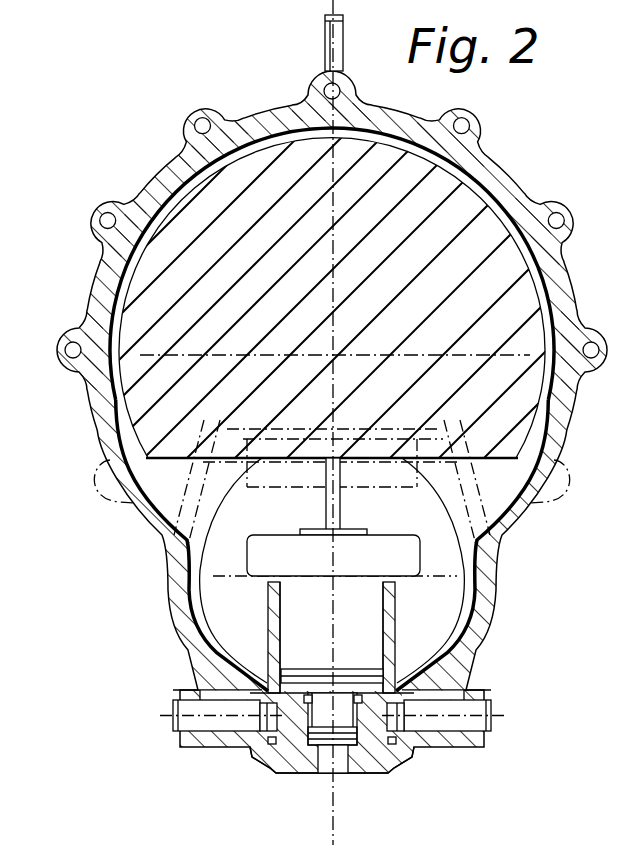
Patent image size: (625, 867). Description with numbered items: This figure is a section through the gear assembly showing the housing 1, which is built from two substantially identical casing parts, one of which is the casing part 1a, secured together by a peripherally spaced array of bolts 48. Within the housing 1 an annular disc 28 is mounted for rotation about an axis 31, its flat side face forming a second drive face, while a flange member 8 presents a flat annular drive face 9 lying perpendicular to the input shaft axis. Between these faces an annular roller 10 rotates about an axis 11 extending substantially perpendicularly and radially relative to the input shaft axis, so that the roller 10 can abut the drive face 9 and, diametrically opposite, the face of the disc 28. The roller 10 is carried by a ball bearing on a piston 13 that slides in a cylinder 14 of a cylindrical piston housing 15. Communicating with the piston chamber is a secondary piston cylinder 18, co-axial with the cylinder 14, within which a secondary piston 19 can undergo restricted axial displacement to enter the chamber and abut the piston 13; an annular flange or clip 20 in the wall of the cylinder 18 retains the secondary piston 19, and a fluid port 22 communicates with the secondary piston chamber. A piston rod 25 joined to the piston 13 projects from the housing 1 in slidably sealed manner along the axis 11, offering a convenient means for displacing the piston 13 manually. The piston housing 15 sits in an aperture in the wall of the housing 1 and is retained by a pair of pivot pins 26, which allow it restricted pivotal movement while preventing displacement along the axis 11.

The housing 1 is at (163, 159).
The casing part 1a is at (250, 127).
The bolts 48 is at (326, 88).
The piston rod 25 is at (325, 30).
The annular disc 28 is at (153, 272).
The axis 31 is at (333, 352).
The axis 11 is at (326, 507).
The annular roller 10 is at (172, 583).
The drive face 9 is at (205, 595).
The flange member 8 is at (207, 628).
The piston 13 is at (278, 597).
The cylinder 14 is at (279, 622).
The cylindrical piston housing 15 is at (272, 650).
The secondary piston 19 is at (340, 698).
The fluid port 22 is at (327, 748).
The secondary piston cylinder 18 is at (344, 722).
The annular flange or clip 20 is at (304, 703).
The pivot pins 26 is at (217, 720).